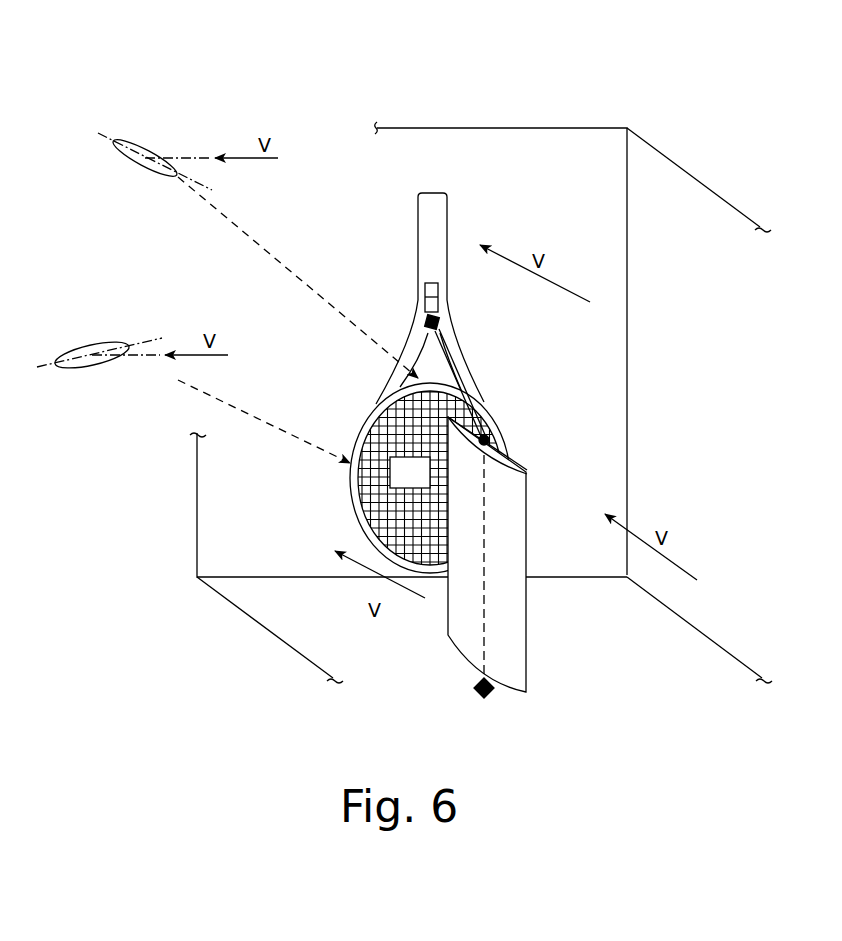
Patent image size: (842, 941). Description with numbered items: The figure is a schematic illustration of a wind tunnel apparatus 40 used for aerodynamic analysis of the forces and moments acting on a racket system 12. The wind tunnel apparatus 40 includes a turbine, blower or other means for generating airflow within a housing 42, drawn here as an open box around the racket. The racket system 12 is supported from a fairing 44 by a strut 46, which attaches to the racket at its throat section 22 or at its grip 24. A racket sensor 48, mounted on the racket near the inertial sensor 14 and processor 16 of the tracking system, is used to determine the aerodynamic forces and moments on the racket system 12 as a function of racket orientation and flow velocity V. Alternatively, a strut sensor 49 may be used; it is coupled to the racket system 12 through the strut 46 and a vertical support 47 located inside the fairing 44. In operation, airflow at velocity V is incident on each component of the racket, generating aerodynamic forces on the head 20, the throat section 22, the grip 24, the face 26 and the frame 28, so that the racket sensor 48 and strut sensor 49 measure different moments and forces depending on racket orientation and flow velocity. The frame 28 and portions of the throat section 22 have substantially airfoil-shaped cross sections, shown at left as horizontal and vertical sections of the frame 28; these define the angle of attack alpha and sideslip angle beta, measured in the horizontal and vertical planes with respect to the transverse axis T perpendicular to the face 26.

The racket system 12 is at (382, 213).
The inertial sensor 14 is at (425, 304).
The processor 16 is at (425, 290).
The head 20 is at (352, 420).
The throat section 22 is at (473, 391).
The grip 24 is at (435, 219).
The face 26 is at (430, 480).
The frame 28 is at (146, 148).
The wind tunnel apparatus 40 is at (150, 46).
The housing 42 is at (452, 129).
The fairing 44 is at (514, 626).
The strut 46 is at (457, 378).
The vertical support 47 is at (484, 478).
The racket sensor 48 is at (440, 323).
The strut sensor 49 is at (475, 688).